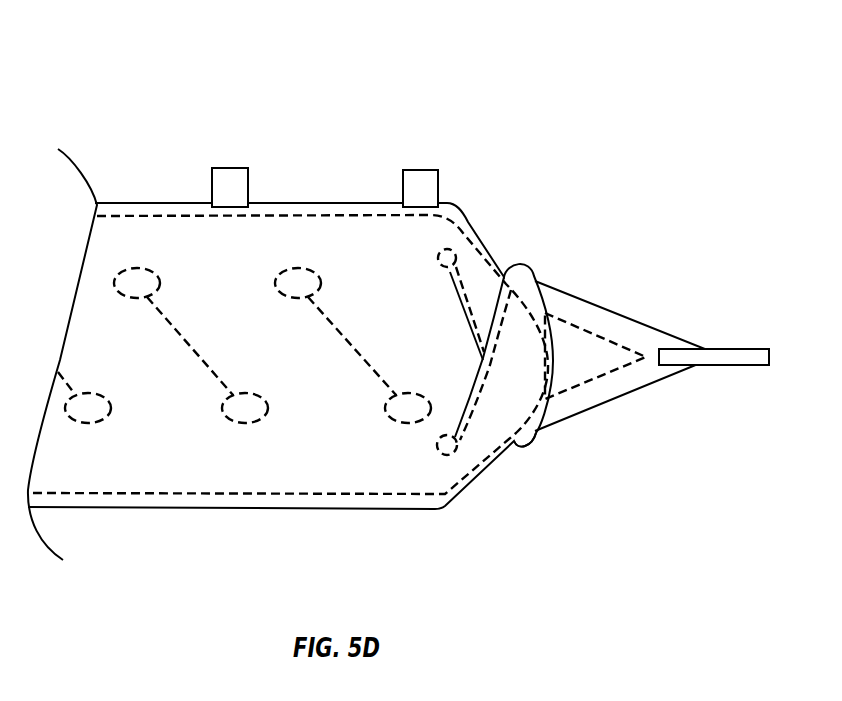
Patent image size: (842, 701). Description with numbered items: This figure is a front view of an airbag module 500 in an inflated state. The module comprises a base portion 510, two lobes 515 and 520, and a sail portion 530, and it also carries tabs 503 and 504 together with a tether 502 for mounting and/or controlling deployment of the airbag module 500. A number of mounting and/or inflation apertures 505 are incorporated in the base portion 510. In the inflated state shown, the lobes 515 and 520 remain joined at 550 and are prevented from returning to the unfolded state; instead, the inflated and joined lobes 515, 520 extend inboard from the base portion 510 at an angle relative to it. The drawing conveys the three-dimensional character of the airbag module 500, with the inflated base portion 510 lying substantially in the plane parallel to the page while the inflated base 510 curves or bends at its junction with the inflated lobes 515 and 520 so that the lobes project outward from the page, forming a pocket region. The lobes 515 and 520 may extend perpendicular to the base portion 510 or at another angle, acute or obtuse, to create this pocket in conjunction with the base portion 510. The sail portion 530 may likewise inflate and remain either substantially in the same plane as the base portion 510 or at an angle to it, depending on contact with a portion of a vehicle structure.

The airbag module 500 is at (519, 110).
The tether 502 is at (768, 349).
The tab 503 is at (231, 177).
The tab 504 is at (427, 177).
The mounting and/or inflation apertures 505 is at (283, 298).
The base portion 510 is at (165, 385).
The lobe 515 is at (530, 268).
The lobe 520 is at (531, 438).
The sail portion 530 is at (604, 366).
The joined region of the lobes 550 is at (557, 348).